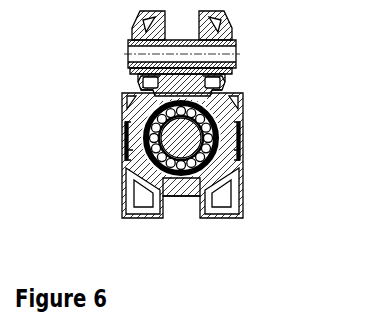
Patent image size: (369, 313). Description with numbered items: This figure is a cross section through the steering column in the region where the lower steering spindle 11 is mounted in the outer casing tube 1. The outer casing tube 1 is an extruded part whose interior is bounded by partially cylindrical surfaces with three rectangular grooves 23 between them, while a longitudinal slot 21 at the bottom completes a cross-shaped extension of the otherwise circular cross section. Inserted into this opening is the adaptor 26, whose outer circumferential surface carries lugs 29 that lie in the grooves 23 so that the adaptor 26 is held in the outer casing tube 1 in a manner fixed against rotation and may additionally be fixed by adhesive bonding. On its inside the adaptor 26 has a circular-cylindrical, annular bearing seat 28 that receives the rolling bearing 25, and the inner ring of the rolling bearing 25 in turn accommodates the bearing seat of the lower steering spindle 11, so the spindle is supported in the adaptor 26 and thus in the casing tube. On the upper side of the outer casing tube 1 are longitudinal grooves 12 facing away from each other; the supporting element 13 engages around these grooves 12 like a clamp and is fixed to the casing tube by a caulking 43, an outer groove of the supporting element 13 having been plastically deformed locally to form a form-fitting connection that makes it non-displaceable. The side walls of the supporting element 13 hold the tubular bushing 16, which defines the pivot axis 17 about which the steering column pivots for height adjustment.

The outer casing tube 1 is at (243, 195).
The lower steering spindle 11 is at (145, 208).
The longitudinal grooves 12 is at (232, 93).
The supporting element 13 is at (233, 23).
The tubular bushing 16 is at (237, 42).
The pivot axis 17 is at (240, 54).
The longitudinal slot 21 is at (190, 202).
The rectangular grooves 23 is at (127, 150).
The rolling bearing 25 is at (236, 143).
The adaptor 26 is at (134, 68).
The bearing seat 28 is at (188, 200).
The lugs 29 is at (142, 85).
The caulking 43 is at (232, 79).